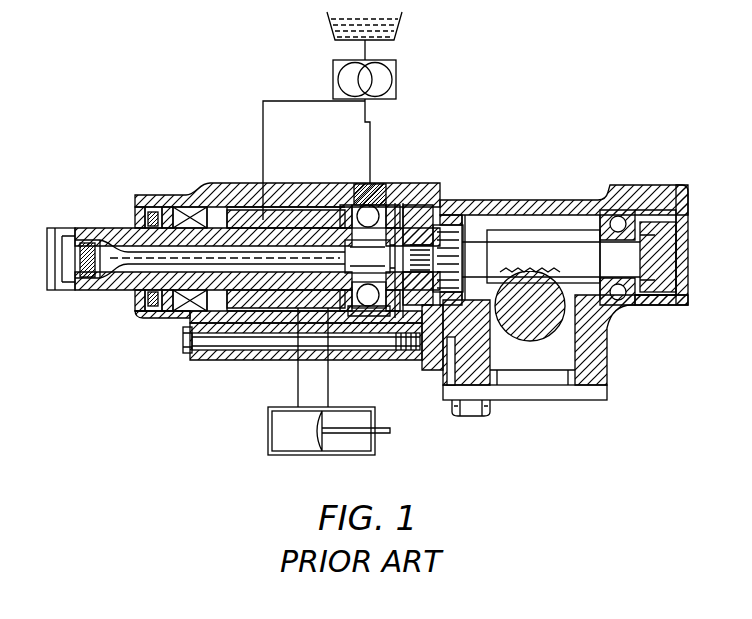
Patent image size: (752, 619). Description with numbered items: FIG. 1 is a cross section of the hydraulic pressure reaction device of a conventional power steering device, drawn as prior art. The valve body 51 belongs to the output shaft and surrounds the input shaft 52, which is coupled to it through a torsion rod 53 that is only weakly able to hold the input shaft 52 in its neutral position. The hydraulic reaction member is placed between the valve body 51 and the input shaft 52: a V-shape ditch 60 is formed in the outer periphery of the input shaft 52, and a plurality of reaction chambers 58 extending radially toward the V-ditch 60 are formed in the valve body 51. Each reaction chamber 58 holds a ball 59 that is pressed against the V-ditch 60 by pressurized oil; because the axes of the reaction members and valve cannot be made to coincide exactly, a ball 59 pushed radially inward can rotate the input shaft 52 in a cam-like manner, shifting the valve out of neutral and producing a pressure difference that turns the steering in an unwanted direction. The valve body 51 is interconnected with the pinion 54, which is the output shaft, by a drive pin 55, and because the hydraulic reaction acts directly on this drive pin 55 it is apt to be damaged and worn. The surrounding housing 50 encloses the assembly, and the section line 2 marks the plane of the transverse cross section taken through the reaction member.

The section line for FIG. 2 is at (365, 175).
The housing 50 is at (175, 312).
The valve body 51 is at (223, 208).
The input shaft 52 is at (130, 291).
The torsion rod 53 is at (108, 264).
The pinion 54 is at (535, 250).
The drive pin 55 is at (440, 235).
The reaction chamber 58 is at (378, 182).
The ball 59 is at (380, 213).
The V-shape ditch 60 is at (368, 306).